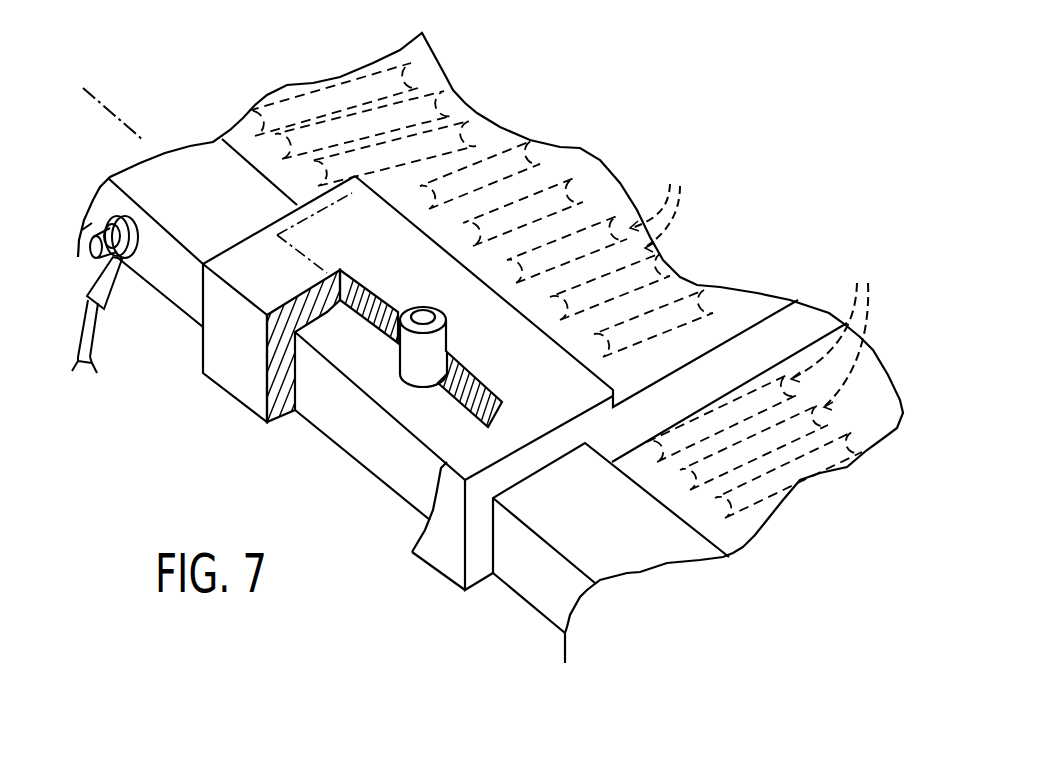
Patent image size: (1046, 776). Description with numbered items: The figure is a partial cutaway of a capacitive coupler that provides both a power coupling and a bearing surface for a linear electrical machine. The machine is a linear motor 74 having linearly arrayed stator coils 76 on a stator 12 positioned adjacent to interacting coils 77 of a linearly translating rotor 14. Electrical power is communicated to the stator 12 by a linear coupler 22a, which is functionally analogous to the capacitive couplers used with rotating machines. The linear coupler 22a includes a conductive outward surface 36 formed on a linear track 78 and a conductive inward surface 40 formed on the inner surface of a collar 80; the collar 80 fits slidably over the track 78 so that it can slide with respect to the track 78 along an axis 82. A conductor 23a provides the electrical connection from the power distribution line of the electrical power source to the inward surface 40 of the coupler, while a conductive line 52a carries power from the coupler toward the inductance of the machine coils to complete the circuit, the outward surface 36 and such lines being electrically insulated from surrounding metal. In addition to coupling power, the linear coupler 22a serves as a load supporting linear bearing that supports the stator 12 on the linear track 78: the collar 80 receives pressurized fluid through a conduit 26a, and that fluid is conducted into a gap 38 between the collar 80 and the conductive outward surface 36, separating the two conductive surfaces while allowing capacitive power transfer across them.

The stator 12 is at (883, 430).
The rotor 14 is at (750, 300).
The linear coupler 22a is at (207, 401).
The conductor 23a is at (97, 282).
The conduit 26a is at (411, 311).
The conductive outward surface 36 is at (627, 558).
The gap 38 is at (434, 402).
The conductive inward surface 40 is at (383, 331).
The conductive line 52a is at (322, 210).
The linear motor 74 is at (822, 246).
The stator coils 76 is at (833, 330).
The rotor coils 77 is at (661, 204).
The linear track 78 is at (560, 600).
The collar 80 is at (248, 395).
The axis 82 is at (113, 115).